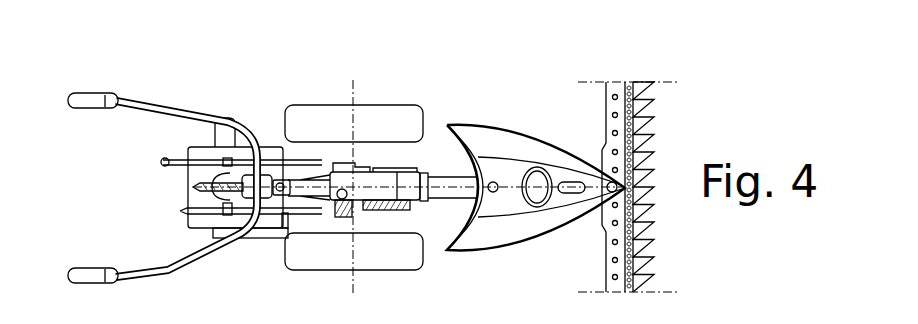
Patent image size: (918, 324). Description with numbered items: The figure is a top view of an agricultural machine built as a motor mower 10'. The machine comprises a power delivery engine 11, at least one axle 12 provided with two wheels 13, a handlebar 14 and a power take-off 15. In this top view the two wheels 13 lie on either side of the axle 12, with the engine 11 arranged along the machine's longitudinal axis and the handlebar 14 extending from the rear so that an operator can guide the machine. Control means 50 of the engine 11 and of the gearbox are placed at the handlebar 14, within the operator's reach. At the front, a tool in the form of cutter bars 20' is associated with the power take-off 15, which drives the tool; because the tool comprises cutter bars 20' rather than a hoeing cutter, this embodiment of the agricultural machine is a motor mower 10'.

The motor mower 10' is at (536, 128).
The power delivery engine 11 is at (268, 152).
The axle 12 is at (357, 152).
The wheels 13 is at (338, 123).
The handlebar 14 is at (95, 267).
The power take-off 15 is at (417, 203).
The cutter bars 20' is at (663, 184).
The control means 50 is at (180, 211).